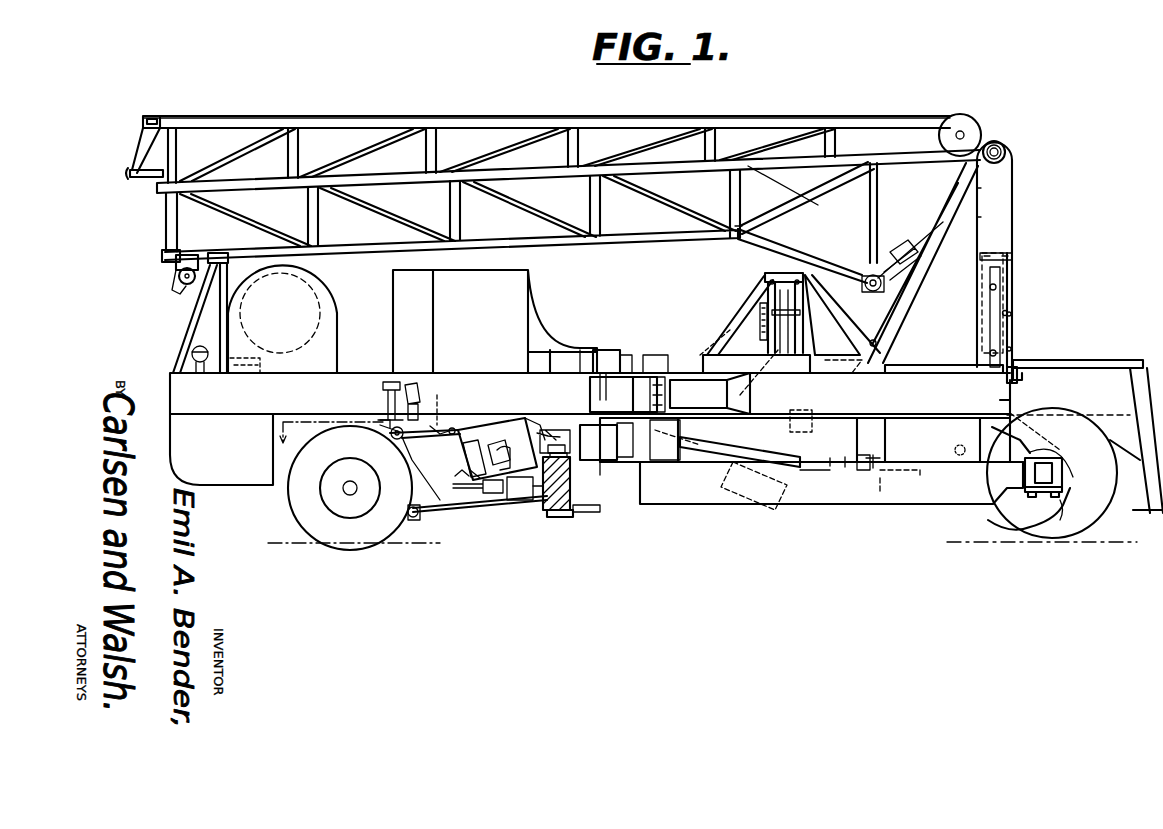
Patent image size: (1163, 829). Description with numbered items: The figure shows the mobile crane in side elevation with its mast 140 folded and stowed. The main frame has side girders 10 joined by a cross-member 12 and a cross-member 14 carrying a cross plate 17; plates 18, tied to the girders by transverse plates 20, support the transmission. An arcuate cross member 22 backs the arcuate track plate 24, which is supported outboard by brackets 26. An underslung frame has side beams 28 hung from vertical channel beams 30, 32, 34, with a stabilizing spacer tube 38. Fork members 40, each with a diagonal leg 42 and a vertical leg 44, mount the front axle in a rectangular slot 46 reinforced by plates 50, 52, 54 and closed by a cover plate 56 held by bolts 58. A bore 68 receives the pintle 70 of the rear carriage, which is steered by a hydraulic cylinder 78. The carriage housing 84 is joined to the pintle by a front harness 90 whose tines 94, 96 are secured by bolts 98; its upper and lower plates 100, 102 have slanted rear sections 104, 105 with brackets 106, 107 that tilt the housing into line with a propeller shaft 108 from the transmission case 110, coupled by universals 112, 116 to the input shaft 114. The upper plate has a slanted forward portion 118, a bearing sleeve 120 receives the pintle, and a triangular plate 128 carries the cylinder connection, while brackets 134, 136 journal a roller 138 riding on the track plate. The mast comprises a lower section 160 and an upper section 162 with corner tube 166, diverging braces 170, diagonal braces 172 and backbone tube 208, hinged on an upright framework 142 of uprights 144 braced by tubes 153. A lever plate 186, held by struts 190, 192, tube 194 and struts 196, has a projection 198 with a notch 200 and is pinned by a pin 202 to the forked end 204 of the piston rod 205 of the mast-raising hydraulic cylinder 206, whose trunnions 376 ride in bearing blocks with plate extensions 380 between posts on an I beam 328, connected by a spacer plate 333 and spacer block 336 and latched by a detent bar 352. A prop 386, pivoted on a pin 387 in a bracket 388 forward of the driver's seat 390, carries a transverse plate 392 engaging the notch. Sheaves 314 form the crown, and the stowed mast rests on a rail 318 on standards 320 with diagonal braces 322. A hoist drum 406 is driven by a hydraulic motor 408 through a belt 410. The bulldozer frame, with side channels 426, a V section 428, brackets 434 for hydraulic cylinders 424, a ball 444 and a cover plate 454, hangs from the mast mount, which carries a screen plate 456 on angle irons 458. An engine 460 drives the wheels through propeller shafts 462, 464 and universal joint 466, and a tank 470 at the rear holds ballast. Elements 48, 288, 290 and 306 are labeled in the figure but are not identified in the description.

The side girders 10 is at (912, 403).
The cross-member 12 is at (437, 395).
The cross-member 14 is at (655, 372).
The cross plate 17 is at (632, 372).
The plates 18 is at (607, 378).
The transverse plates 20 is at (581, 366).
The arcuate cross member 22 is at (385, 383).
The arcuate track plate 24 is at (376, 430).
The brackets 26 is at (415, 384).
The side beams 28 is at (812, 506).
The vertical channel beams 30 is at (672, 458).
The vertical channel beams 32 is at (866, 462).
The vertical channel beams 34 is at (975, 417).
The stabilizing spacer tube 38 is at (972, 449).
The fork members 40 is at (1090, 420).
The diagonal leg 42 is at (1013, 416).
The vertical leg 44 is at (1052, 456).
The rectangular slot 46 is at (1062, 482).
The rear step 48 is at (1107, 430).
The reinforcing plate 50 is at (1040, 463).
The reinforcing plate 52 is at (1022, 474).
The reinforcing plate 54 is at (1056, 475).
The cover plate 56 is at (1025, 497).
The bolts 58 is at (1042, 500).
The bore 68 is at (594, 510).
The pintle 70 is at (560, 517).
The hydraulic cylinder 78 is at (577, 470).
The housing 84 is at (456, 472).
The front harness 90 is at (538, 421).
The tine 94 is at (498, 424).
The lower tine 96 is at (510, 455).
The bolts 98 is at (457, 428).
The upper plate 100 is at (497, 418).
The lower plate 102 is at (517, 525).
The slanted rear section 104 is at (446, 420).
The slanted rear section 105 is at (441, 506).
The bracket 106 is at (452, 442).
The bracket 107 is at (424, 516).
The propeller shaft 108 is at (520, 500).
The transmission case 110 is at (604, 457).
The universal 112 is at (598, 442).
The gear housing input shaft 114 is at (466, 434).
The universal 116 is at (494, 508).
The forward portion 118 is at (536, 426).
The bearing sleeve 120 is at (548, 520).
The triangular plate 128 is at (501, 498).
The bracket 134 is at (398, 427).
The bracket 136 is at (445, 440).
The roller 138 is at (402, 452).
The mast 140 is at (686, 111).
The upright framework 142 is at (1026, 299).
The uprights 144 is at (1002, 235).
The tubes 153 is at (970, 218).
The lower mast section 160 is at (191, 230).
The upper mast section 162 is at (228, 109).
The corner tube 166 is at (582, 166).
The diverging braces 170 is at (453, 210).
The diagonal braces 172 is at (386, 222).
The plate 186 is at (861, 262).
The struts 190 is at (913, 222).
The struts 192 is at (820, 205).
The tube 194 is at (770, 236).
The struts 196 is at (788, 190).
The projection 198 is at (906, 246).
The notch 200 is at (925, 272).
The pin 202 is at (912, 312).
The forked end 204 is at (915, 300).
The piston rod 205 is at (879, 213).
The hydraulic cylinder 206 is at (826, 246).
The backbone tube 208 is at (507, 118).
The sheave bracket 288 is at (178, 284).
The sheave 290 is at (177, 270).
The boom tip bracket 306 is at (128, 173).
The sheaves 314 is at (958, 118).
The rail 318 is at (225, 250).
The standards 320 is at (263, 307).
The diagonal braces 322 is at (196, 314).
The longitudinal I beam 328 is at (790, 376).
The outer spacer plate 333 is at (818, 420).
The spacer block 336 is at (765, 276).
The detent bar 352 is at (770, 310).
The trunnions 376 is at (757, 440).
The plate extensions 380 is at (777, 303).
The prop 386 is at (980, 188).
The pin 387 is at (903, 345).
The bracket 388 is at (884, 372).
The driver's seat 390 is at (838, 350).
The transverse plate 392 is at (997, 165).
The hoist drum 406 is at (336, 322).
The hydraulic motor 408 is at (212, 378).
The belt 410 is at (259, 384).
The hydraulic cylinders 424 is at (1014, 314).
The side channels 426 is at (745, 374).
The V section 428 is at (700, 403).
The brackets 434 is at (1014, 349).
The truncated sphere 444 is at (726, 356).
The cover plate 454 is at (1110, 360).
The screen plate 456 is at (1012, 262).
The angle irons 458 is at (833, 462).
The engine 460 is at (516, 274).
The propeller shaft 462 is at (725, 472).
The propeller shaft 464 is at (910, 486).
The universal joint 466 is at (690, 458).
The tank 470 is at (240, 477).